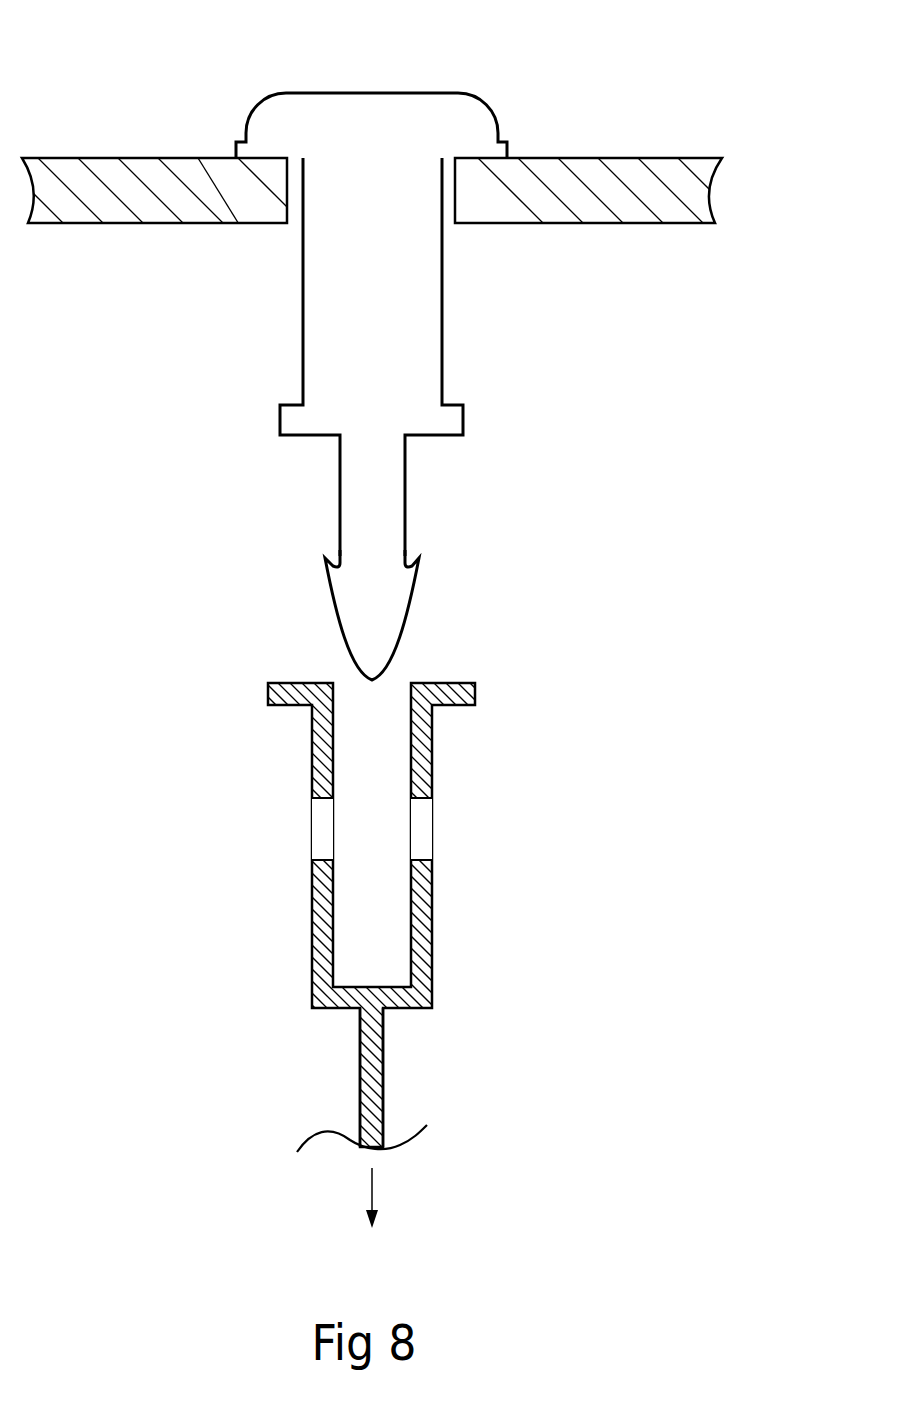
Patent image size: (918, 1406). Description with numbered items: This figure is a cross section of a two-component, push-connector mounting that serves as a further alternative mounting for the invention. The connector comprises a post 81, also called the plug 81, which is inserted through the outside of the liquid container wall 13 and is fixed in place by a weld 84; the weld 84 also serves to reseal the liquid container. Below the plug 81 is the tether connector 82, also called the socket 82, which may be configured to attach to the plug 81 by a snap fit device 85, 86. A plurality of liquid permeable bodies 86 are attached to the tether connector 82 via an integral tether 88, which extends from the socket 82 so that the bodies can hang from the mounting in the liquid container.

The liquid container wall 13 is at (557, 187).
The post 81 is at (407, 341).
The tether connector 82 is at (422, 755).
The weld 84 is at (262, 157).
The snap fit device 85 is at (320, 562).
The snap fit device / liquid permeable bodies 86 is at (320, 825).
The tether 88 is at (372, 1082).